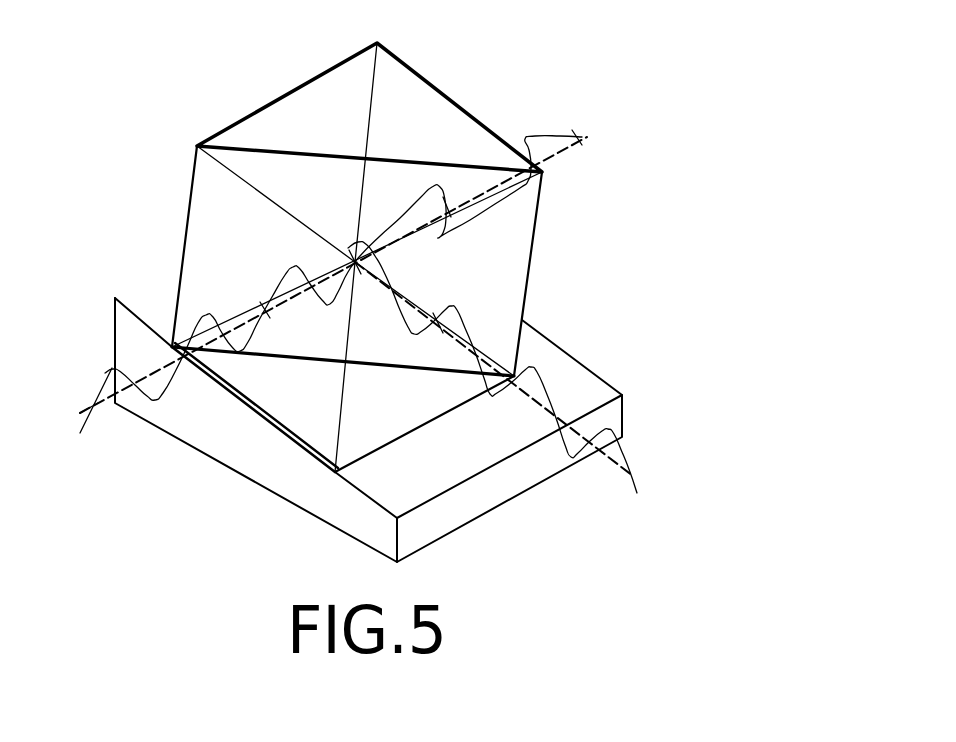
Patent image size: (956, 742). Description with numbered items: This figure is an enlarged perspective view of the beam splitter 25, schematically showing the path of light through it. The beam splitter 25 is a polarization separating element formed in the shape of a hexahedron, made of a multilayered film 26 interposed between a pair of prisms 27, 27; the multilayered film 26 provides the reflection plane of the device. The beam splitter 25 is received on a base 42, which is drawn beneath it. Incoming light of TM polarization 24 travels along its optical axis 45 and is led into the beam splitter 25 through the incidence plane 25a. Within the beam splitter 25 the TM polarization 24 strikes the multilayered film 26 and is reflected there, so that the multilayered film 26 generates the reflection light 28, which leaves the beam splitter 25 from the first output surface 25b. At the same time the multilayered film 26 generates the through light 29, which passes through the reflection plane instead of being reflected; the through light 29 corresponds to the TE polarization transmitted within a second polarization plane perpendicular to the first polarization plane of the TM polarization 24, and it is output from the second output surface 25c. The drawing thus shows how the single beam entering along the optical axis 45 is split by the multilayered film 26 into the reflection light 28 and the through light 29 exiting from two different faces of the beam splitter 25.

The TM polarization 24 is at (107, 373).
The beam splitter 25 is at (365, 252).
The incidence plane 25a is at (200, 218).
The first output surface 25b is at (442, 402).
The second output surface 25c is at (520, 227).
The multilayered film 26 is at (222, 145).
The prism 27 is at (397, 57).
The reflection light 28 is at (630, 470).
The through light 29 is at (582, 137).
The base 42 is at (610, 418).
The optical axis 45 is at (102, 406).